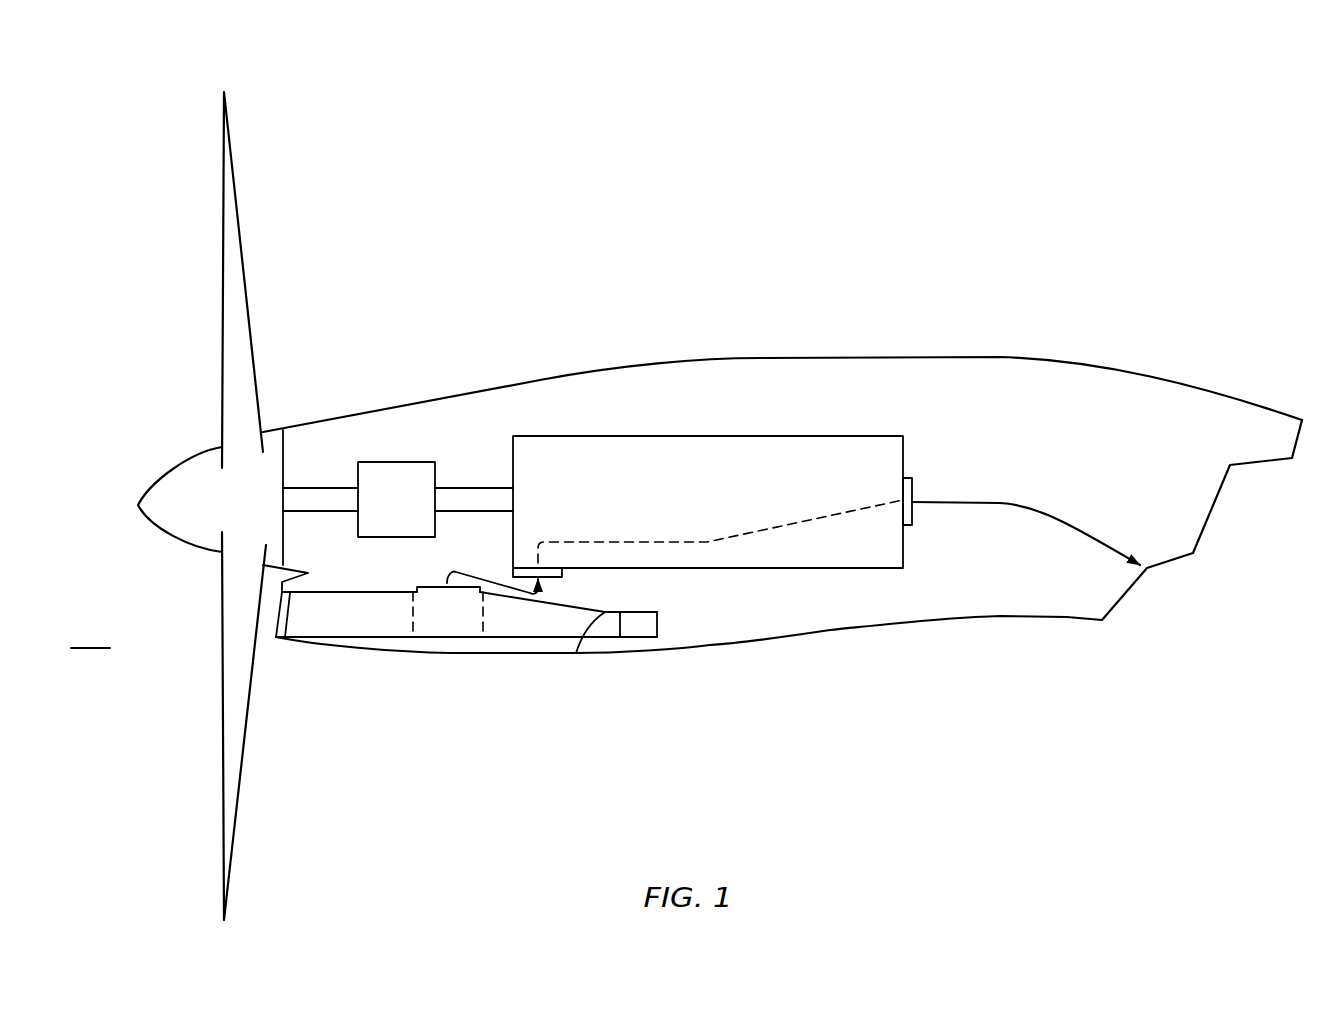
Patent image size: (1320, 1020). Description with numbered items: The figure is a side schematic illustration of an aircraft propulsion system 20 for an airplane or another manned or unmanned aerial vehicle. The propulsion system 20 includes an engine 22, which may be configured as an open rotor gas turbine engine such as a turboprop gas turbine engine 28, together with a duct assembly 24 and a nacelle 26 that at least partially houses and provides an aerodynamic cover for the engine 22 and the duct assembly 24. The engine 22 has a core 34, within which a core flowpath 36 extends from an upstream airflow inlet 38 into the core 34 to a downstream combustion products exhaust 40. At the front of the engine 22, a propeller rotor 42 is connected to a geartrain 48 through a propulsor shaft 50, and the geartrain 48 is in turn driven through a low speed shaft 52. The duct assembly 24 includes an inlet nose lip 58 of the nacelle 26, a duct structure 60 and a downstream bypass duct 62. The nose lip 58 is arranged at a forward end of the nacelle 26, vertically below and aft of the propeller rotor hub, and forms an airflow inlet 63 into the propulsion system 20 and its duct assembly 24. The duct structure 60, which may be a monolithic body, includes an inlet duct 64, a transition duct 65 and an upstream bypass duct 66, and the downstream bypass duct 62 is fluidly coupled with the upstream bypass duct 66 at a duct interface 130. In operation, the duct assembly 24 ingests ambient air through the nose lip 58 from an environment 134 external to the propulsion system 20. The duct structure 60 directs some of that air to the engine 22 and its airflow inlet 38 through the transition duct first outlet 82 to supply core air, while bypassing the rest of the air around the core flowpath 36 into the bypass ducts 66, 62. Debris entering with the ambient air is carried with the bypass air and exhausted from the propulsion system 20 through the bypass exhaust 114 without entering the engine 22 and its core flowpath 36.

The propulsion system 20 is at (1012, 183).
The engine 22 is at (614, 396).
The turboprop gas turbine engine 28 is at (720, 476).
The duct assembly 24 is at (445, 645).
The nacelle 26 is at (470, 382).
The core 34 is at (737, 426).
The core flowpath 36 is at (727, 547).
The airflow inlet 38 is at (556, 578).
The combustion products exhaust 40 is at (912, 484).
The propeller rotor 42 is at (244, 104).
The geartrain 48 is at (395, 462).
The propulsor shaft 50 is at (322, 487).
The low speed shaft 52 is at (462, 485).
The inlet nose lip 58 is at (270, 620).
The duct structure 60 is at (358, 645).
The downstream bypass duct 62 is at (608, 645).
The airflow inlet 63 is at (277, 607).
The inlet duct 64 is at (387, 632).
The transition duct 65 is at (465, 632).
The upstream bypass duct 66 is at (533, 632).
The transition duct first outlet 82 is at (435, 585).
The bypass exhaust 114 is at (640, 633).
The duct interface 130 is at (576, 653).
The environment 134 is at (90, 632).